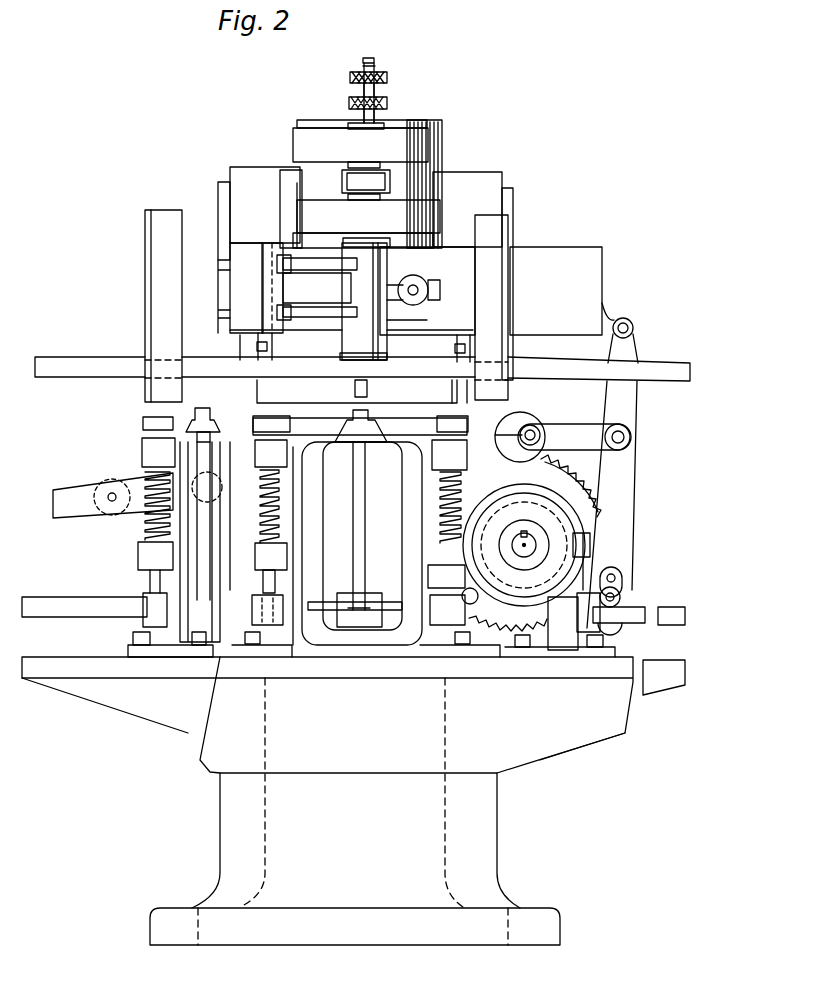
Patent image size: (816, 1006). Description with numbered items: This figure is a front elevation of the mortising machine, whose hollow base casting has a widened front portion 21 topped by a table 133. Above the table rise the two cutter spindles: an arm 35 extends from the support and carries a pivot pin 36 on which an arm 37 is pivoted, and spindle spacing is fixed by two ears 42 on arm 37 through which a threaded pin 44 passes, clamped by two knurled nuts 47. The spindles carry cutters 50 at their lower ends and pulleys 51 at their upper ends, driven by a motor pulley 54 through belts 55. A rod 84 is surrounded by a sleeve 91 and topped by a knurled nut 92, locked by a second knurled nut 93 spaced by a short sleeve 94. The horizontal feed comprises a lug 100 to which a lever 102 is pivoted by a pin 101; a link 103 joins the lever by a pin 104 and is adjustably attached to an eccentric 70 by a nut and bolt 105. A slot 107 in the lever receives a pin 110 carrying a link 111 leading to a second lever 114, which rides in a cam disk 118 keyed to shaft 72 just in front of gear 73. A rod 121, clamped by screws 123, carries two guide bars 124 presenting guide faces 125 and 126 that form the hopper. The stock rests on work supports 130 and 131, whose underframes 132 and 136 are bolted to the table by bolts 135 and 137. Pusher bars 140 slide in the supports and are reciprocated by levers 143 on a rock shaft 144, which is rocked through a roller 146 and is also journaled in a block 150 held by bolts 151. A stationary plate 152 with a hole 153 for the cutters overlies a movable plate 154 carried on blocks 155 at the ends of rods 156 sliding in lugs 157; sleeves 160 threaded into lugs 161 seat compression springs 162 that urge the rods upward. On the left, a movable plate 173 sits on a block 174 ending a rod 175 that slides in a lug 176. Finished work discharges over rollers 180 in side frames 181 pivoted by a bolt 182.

The widened front portion 21 is at (490, 805).
The arm 35 is at (312, 245).
The pivot pin 36 is at (272, 243).
The arm 37 is at (317, 287).
The ears 42 is at (432, 290).
The threaded pin 44 is at (414, 288).
The knurled nuts 47 is at (417, 300).
The cutters 50 is at (368, 392).
The pulleys 51 is at (385, 170).
The pulley 54 is at (443, 150).
The belts 55 is at (430, 215).
The eccentric 70 is at (515, 413).
The shaft 72 is at (540, 540).
The gear 73 is at (580, 488).
The rod 84 is at (373, 63).
The sleeve 91 is at (380, 125).
The knurled nut 92 is at (349, 103).
The second knurled nut 93 is at (350, 76).
The short sleeve 94 is at (376, 90).
The lug 100 is at (607, 308).
The pin 101 is at (631, 325).
The lever 102 is at (638, 352).
The link 103 is at (572, 430).
The pin 104 is at (630, 434).
The nut and bolt 105 is at (534, 426).
The slot 107 is at (620, 580).
The pin 110 is at (620, 597).
The link 111 is at (565, 582).
The second lever 114 is at (480, 487).
The cam disk 118 is at (530, 545).
The rod 121 is at (77, 358).
The screw 123 is at (255, 345).
The guide bars 124 is at (168, 210).
The guide face 125 is at (160, 242).
The guide face 126 is at (170, 268).
The work support 130 is at (332, 430).
The work support 131 is at (222, 412).
The underframe 132 is at (395, 636).
The table 133 is at (508, 667).
The bolts 135 is at (252, 645).
The underframe 136 is at (140, 648).
The bolts 137 is at (138, 638).
The pusher bars 140 is at (203, 408).
The levers 143 is at (205, 525).
The rock shaft 144 is at (80, 598).
The roller 146 is at (595, 540).
The block 150 is at (560, 632).
The bolts 151 is at (605, 641).
The stationary plate 152 is at (425, 402).
The hole 153 is at (390, 400).
The movable plate 154 is at (305, 415).
The blocks 155 is at (252, 426).
The rods 156 is at (270, 590).
The lugs 157 is at (255, 455).
The sleeves 160 is at (262, 573).
The lugs 161 is at (256, 552).
The compression springs 162 is at (258, 528).
The movable plate 173 is at (150, 418).
The block 174 is at (150, 424).
The rod 175 is at (150, 508).
The lug 176 is at (143, 447).
The rollers 180 is at (85, 496).
The side frames 181 is at (62, 501).
The bolt 182 is at (360, 497).